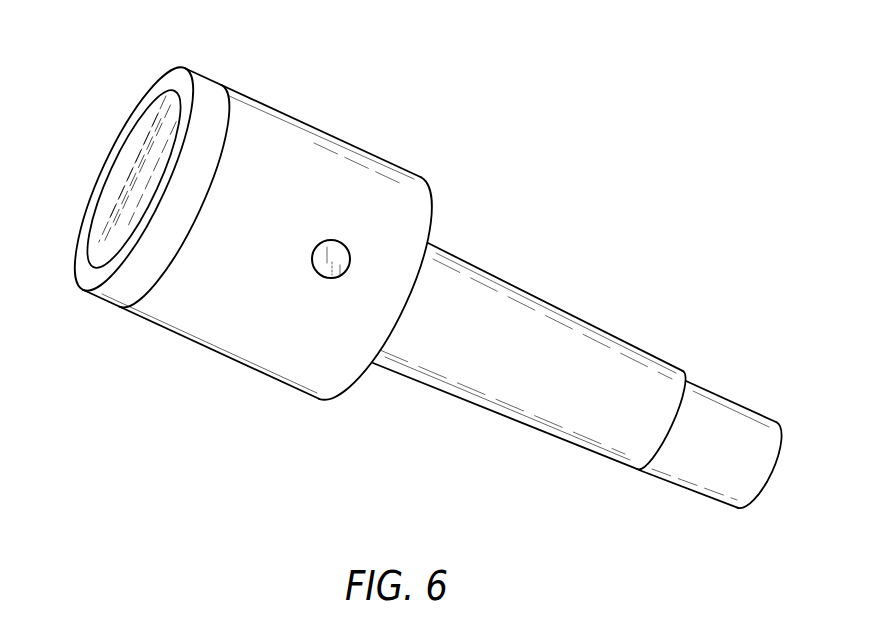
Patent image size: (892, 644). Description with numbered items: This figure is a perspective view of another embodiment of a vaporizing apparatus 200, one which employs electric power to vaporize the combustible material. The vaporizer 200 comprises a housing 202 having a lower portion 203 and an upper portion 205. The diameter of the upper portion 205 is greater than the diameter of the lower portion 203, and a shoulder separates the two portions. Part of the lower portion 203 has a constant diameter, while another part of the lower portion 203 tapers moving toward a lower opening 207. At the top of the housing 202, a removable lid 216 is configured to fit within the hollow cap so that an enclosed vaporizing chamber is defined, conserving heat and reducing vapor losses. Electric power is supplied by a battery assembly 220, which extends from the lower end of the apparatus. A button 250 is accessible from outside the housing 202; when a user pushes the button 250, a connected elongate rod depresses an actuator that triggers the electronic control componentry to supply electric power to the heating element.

The vaporizing apparatus 200 is at (427, 289).
The housing 202 is at (285, 252).
The lower portion 203 is at (516, 310).
The upper portion 205 is at (207, 105).
The lower opening 207 is at (648, 483).
The removable lid 216 is at (135, 147).
The battery assembly 220 is at (722, 408).
The button 250 is at (340, 278).